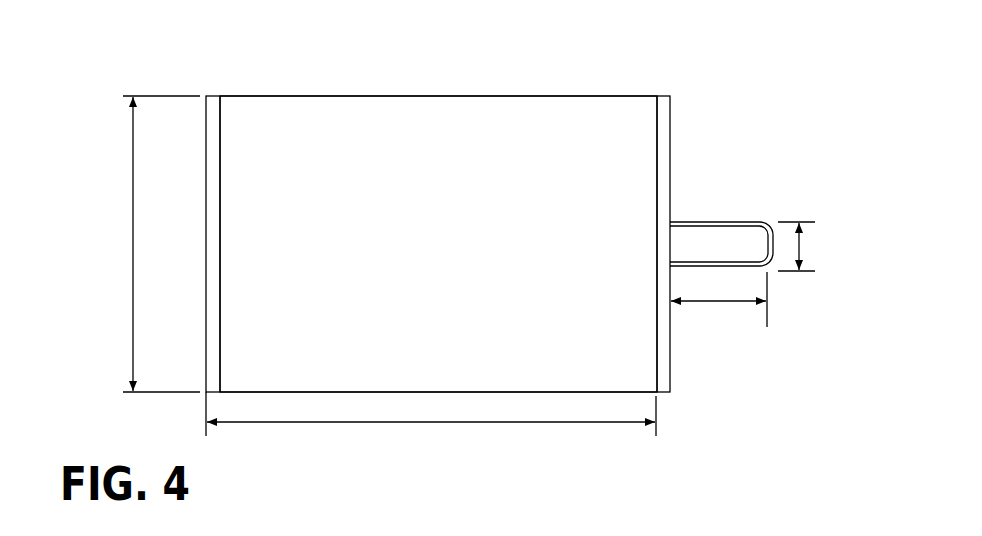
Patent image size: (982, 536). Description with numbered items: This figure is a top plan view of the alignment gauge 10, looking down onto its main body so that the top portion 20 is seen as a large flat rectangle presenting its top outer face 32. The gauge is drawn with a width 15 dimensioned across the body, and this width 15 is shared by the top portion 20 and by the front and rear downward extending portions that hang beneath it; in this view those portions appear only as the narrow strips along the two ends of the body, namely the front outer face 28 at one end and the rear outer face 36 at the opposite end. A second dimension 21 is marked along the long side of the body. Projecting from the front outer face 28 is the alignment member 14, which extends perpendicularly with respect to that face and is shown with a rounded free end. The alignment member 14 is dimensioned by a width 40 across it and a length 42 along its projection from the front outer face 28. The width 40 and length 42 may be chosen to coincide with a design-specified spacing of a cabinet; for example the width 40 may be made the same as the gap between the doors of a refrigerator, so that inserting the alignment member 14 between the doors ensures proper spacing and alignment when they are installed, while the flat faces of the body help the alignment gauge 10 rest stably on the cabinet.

The alignment gauge 10 is at (706, 97).
The alignment member 14 is at (713, 236).
The width 15 is at (132, 250).
The top portion 20 is at (342, 130).
The length of battery cell 21 is at (478, 422).
The front outer face 28 is at (675, 341).
The top outer face 32 is at (459, 261).
The rear outer face 36 is at (204, 261).
The width 40 is at (803, 250).
The length 42 is at (712, 306).